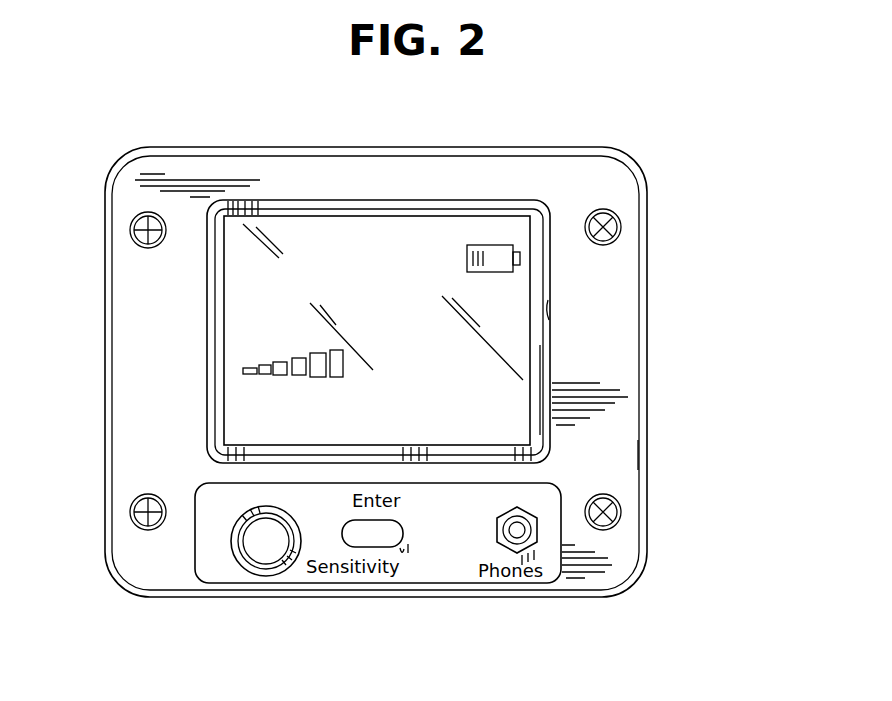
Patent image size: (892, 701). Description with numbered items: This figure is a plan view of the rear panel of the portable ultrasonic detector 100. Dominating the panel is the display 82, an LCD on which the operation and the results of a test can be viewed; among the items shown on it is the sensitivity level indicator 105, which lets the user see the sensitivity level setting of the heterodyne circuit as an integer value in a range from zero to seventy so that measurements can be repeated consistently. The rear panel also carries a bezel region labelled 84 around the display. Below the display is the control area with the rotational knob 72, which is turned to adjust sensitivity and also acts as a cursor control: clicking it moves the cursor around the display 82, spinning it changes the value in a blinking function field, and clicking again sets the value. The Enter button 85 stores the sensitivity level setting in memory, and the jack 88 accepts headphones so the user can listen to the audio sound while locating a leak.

The portable ultrasonic detector 100 is at (556, 147).
The sensitivity level indicator 105 is at (214, 307).
The display bezel 84 is at (549, 310).
The display 82 is at (600, 466).
The rotational knob 72 is at (254, 560).
The Enter button 85 is at (391, 572).
The jack for headphones 88 is at (543, 575).